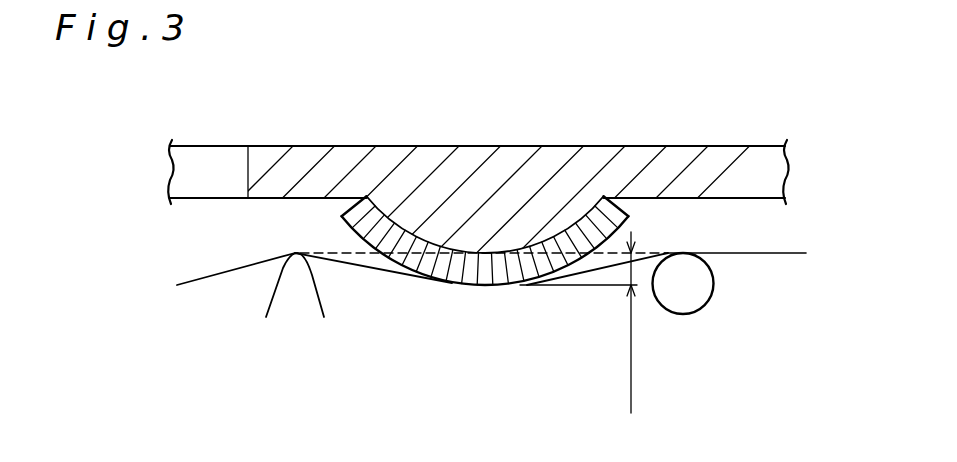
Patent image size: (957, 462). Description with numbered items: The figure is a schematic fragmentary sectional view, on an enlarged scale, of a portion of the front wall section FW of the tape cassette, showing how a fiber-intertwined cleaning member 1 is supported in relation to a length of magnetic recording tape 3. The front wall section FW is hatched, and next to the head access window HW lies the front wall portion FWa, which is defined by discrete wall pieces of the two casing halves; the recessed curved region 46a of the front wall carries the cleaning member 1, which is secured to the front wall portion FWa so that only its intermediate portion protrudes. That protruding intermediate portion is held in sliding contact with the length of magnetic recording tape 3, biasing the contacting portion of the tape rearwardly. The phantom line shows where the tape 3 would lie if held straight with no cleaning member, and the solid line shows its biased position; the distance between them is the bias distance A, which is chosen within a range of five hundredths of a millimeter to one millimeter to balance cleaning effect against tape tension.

The head access window HW is at (219, 160).
The front wall section FW is at (292, 146).
The front wall portion FWa is at (685, 158).
The curved guide surface 46a is at (503, 238).
The cleaning member 1 is at (457, 275).
The length of magnetic recording tape 3 is at (777, 255).
The bias distance A is at (578, 322).